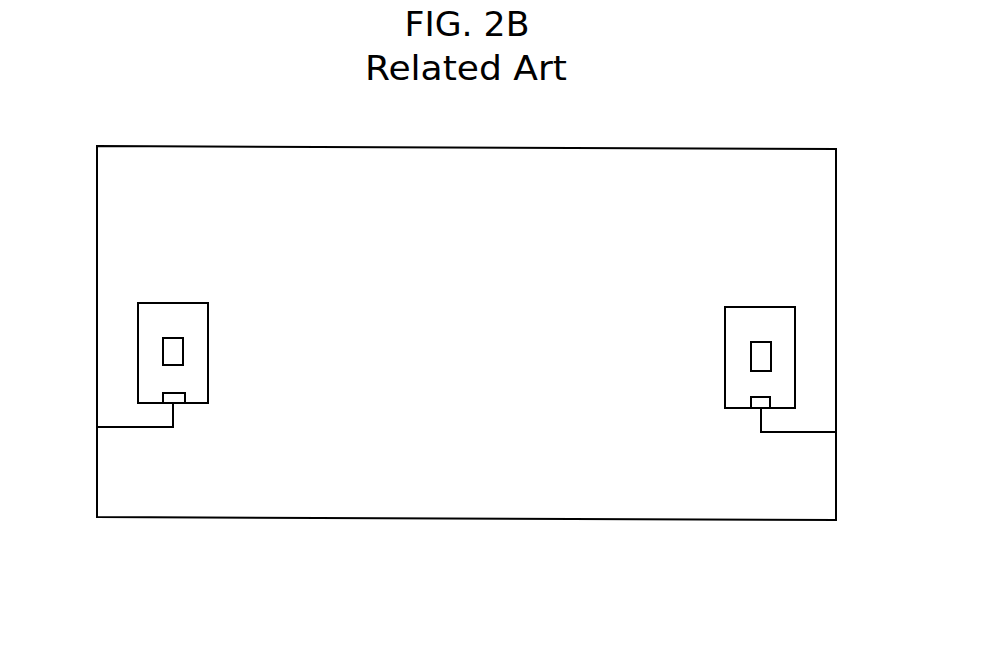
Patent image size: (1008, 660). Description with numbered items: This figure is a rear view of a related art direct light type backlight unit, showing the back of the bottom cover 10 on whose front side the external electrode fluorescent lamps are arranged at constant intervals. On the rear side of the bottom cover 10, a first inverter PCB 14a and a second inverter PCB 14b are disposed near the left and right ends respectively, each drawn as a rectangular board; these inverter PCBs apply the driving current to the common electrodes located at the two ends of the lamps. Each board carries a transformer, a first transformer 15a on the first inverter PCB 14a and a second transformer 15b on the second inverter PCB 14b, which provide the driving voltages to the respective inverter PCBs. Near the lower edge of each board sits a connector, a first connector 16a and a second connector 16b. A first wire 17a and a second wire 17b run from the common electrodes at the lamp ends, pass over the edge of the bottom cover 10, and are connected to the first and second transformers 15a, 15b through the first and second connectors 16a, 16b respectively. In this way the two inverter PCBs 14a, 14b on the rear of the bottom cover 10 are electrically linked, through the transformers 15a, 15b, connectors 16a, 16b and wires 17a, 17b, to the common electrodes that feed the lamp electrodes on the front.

The bottom cover 10 is at (720, 149).
The first inverter PCB 14a is at (175, 303).
The second inverter PCB 14b is at (758, 307).
The first transformer 15a is at (183, 352).
The second transformer 15b is at (751, 355).
The first connector 16a is at (185, 397).
The second connector 16b is at (751, 399).
The first wire 17a is at (142, 427).
The second wire 17b is at (790, 432).